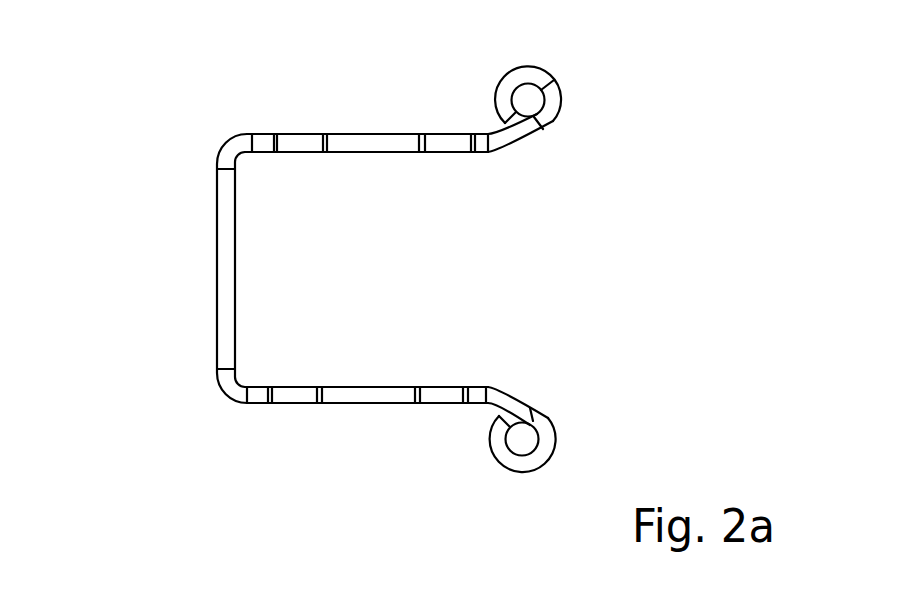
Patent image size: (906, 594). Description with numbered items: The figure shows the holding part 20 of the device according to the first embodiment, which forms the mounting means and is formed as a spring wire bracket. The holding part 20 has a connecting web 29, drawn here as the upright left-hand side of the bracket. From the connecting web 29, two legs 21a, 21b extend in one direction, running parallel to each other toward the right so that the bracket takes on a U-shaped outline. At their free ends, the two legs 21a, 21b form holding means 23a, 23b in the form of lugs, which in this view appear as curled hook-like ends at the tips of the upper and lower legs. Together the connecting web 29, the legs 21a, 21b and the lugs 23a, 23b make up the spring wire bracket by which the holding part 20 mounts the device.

The holding part 20 is at (148, 245).
The leg 21a is at (370, 142).
The leg 21b is at (363, 395).
The holding means 23a is at (559, 91).
The holding means 23b is at (540, 436).
The connecting web 29 is at (225, 333).